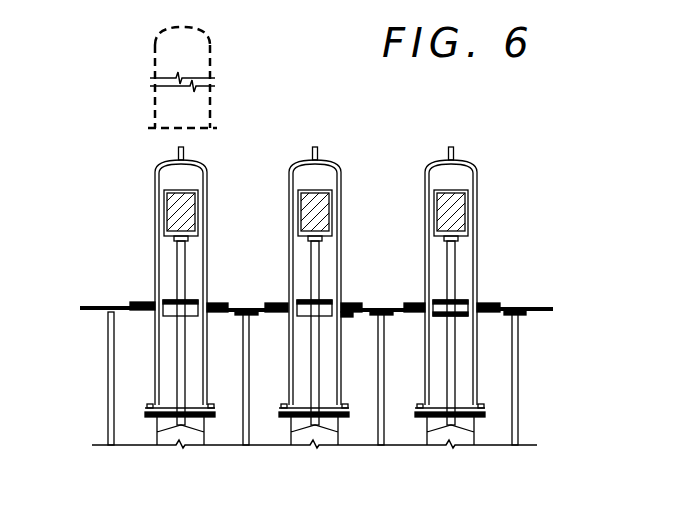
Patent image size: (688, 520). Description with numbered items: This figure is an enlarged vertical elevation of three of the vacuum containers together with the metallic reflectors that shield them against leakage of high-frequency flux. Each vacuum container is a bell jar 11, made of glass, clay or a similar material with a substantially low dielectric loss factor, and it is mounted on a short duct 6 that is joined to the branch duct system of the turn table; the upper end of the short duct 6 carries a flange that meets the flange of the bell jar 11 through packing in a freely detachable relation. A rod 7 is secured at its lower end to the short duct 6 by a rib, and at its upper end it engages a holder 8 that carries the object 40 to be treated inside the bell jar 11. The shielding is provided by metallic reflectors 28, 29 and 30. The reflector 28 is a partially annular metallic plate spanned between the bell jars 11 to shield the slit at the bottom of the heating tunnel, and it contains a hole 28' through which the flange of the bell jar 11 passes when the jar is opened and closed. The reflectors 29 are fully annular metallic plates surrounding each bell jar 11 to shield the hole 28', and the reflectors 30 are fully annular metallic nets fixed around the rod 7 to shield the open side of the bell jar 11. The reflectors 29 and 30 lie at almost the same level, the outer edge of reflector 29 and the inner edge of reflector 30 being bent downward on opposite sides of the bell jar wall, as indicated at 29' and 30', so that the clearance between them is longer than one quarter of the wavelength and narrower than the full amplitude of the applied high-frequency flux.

The short duct 6 is at (155, 435).
The rod 7 is at (176, 277).
The holder 8 is at (173, 232).
The bell jar 11 is at (155, 177).
The object 40 is at (170, 208).
The reflector 28 is at (383, 274).
The hole 28' is at (357, 343).
The reflector 29 is at (530, 289).
The plate pad 29' is at (526, 341).
The reflector 30 is at (501, 266).
The bracket plate 30' is at (504, 366).